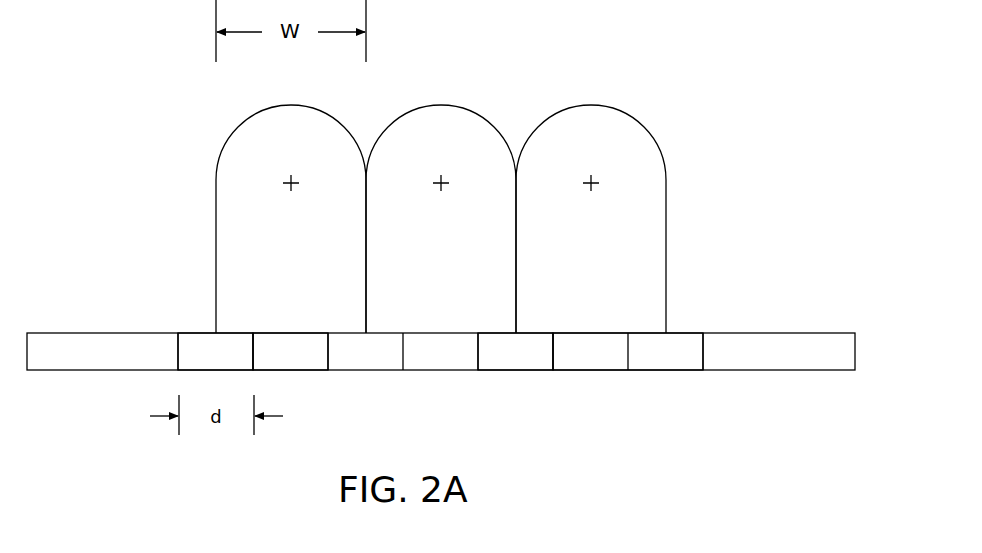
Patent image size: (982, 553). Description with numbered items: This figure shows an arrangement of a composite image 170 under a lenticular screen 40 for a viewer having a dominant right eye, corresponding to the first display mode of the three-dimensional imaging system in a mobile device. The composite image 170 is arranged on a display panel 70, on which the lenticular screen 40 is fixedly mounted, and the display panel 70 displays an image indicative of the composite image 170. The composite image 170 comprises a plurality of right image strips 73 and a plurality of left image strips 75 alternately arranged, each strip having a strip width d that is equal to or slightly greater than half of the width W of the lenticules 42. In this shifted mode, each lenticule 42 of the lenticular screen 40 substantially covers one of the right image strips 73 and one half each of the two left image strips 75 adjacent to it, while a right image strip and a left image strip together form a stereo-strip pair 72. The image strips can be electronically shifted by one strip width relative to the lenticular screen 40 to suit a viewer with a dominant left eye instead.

The lenticular screen 40 is at (474, 201).
The lenticule 42 is at (340, 123).
The display panel 70 is at (826, 332).
The composite image 170 is at (682, 323).
The stereo-strip pair 72 is at (553, 378).
The right image strip 73 is at (275, 370).
The left image strip 75 is at (358, 370).